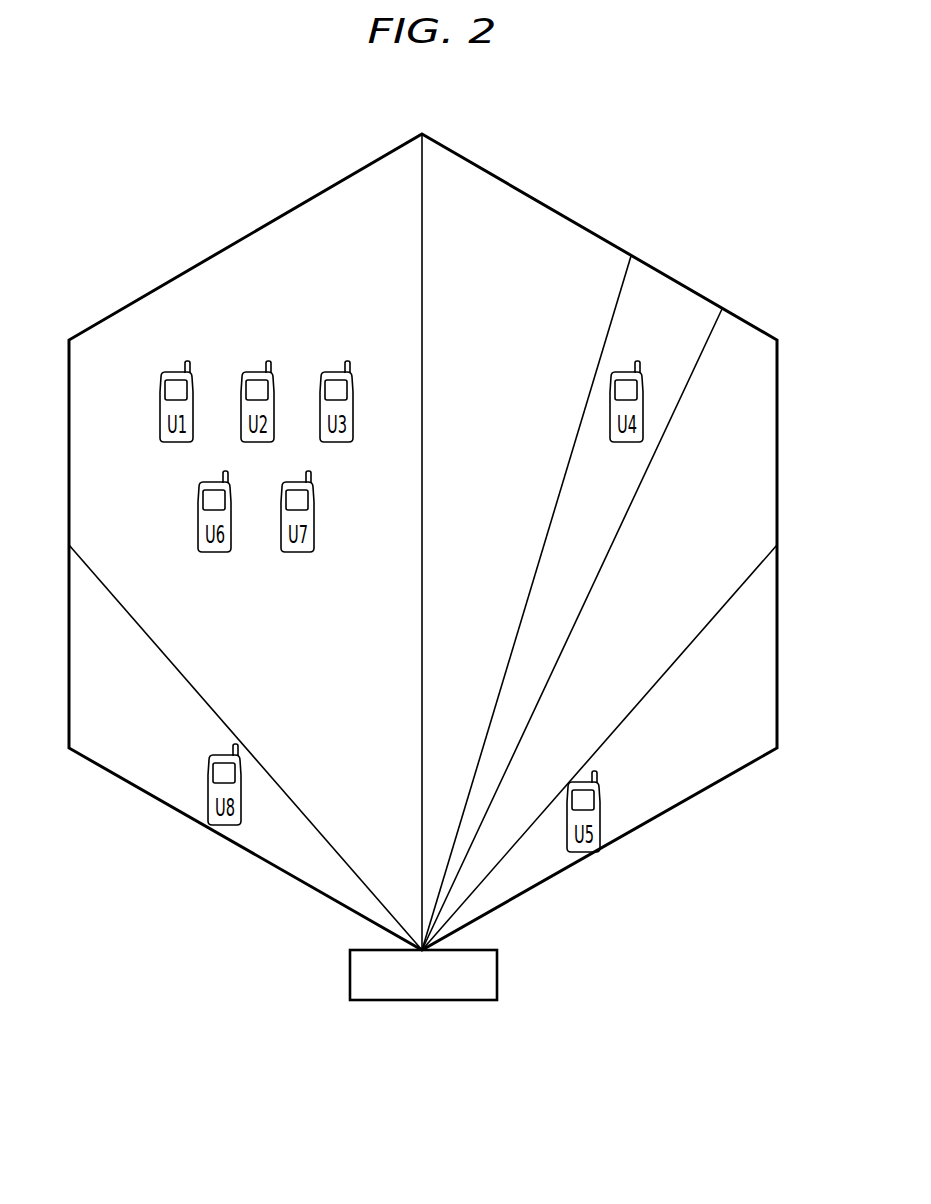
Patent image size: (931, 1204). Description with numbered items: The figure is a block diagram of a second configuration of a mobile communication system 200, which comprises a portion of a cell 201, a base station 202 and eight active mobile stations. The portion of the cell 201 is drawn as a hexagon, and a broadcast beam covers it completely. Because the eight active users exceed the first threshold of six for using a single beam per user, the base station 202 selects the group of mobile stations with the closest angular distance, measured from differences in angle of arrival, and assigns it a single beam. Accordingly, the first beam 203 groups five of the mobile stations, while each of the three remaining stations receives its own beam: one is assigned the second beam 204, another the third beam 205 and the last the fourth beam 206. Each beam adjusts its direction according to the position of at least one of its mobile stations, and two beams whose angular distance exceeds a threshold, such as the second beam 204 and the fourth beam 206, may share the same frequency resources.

The mobile communication system 200 is at (566, 110).
The portion of a cell 201 is at (742, 338).
The base station 202 is at (408, 1002).
The beam 203 is at (230, 262).
The beam 204 is at (162, 788).
The beam 205 is at (663, 290).
The beam 206 is at (642, 805).